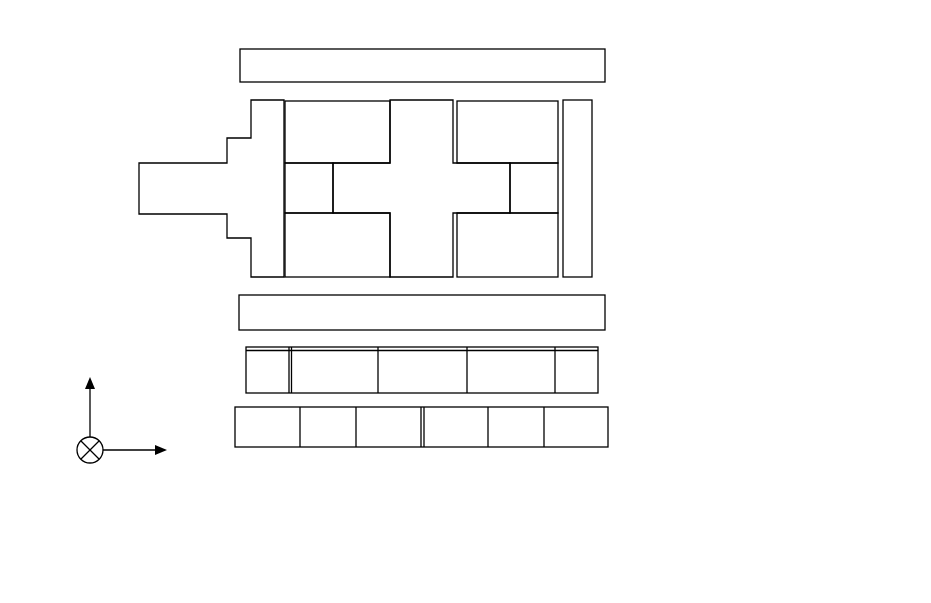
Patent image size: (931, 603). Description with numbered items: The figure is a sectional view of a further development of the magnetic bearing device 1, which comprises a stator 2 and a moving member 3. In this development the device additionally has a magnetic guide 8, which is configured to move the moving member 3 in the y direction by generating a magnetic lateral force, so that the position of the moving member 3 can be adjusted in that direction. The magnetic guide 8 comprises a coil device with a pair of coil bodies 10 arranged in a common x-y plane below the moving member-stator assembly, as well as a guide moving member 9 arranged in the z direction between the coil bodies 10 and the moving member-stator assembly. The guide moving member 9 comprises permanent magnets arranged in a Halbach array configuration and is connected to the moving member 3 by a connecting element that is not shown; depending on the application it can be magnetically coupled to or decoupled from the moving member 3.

The magnetic bearing device 1 is at (142, 70).
The stator 2 is at (627, 207).
The moving member 3 is at (634, 314).
The magnetic guide 8 is at (531, 414).
The guide moving member 9 is at (620, 365).
The coil body 10 is at (387, 423).